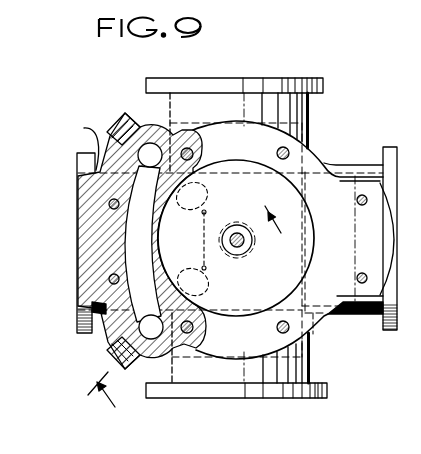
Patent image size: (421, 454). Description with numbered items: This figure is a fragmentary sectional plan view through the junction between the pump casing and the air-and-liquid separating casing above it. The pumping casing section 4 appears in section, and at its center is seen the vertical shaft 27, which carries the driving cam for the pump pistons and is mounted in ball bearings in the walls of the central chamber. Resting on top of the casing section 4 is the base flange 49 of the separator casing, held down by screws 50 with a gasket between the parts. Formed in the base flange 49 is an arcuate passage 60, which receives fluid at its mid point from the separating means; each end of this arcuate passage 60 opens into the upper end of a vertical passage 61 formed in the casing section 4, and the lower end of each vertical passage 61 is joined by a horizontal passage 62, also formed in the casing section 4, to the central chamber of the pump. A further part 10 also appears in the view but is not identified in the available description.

The casing section 4 is at (81, 145).
The section line 10 is at (178, 300).
The vertical shaft 27 is at (245, 247).
The base flange 49 is at (122, 215).
The screws 50 is at (92, 288).
The arcuate passage 60 is at (126, 258).
The vertical passage 61 is at (152, 145).
The horizontal passage 62 is at (204, 233).